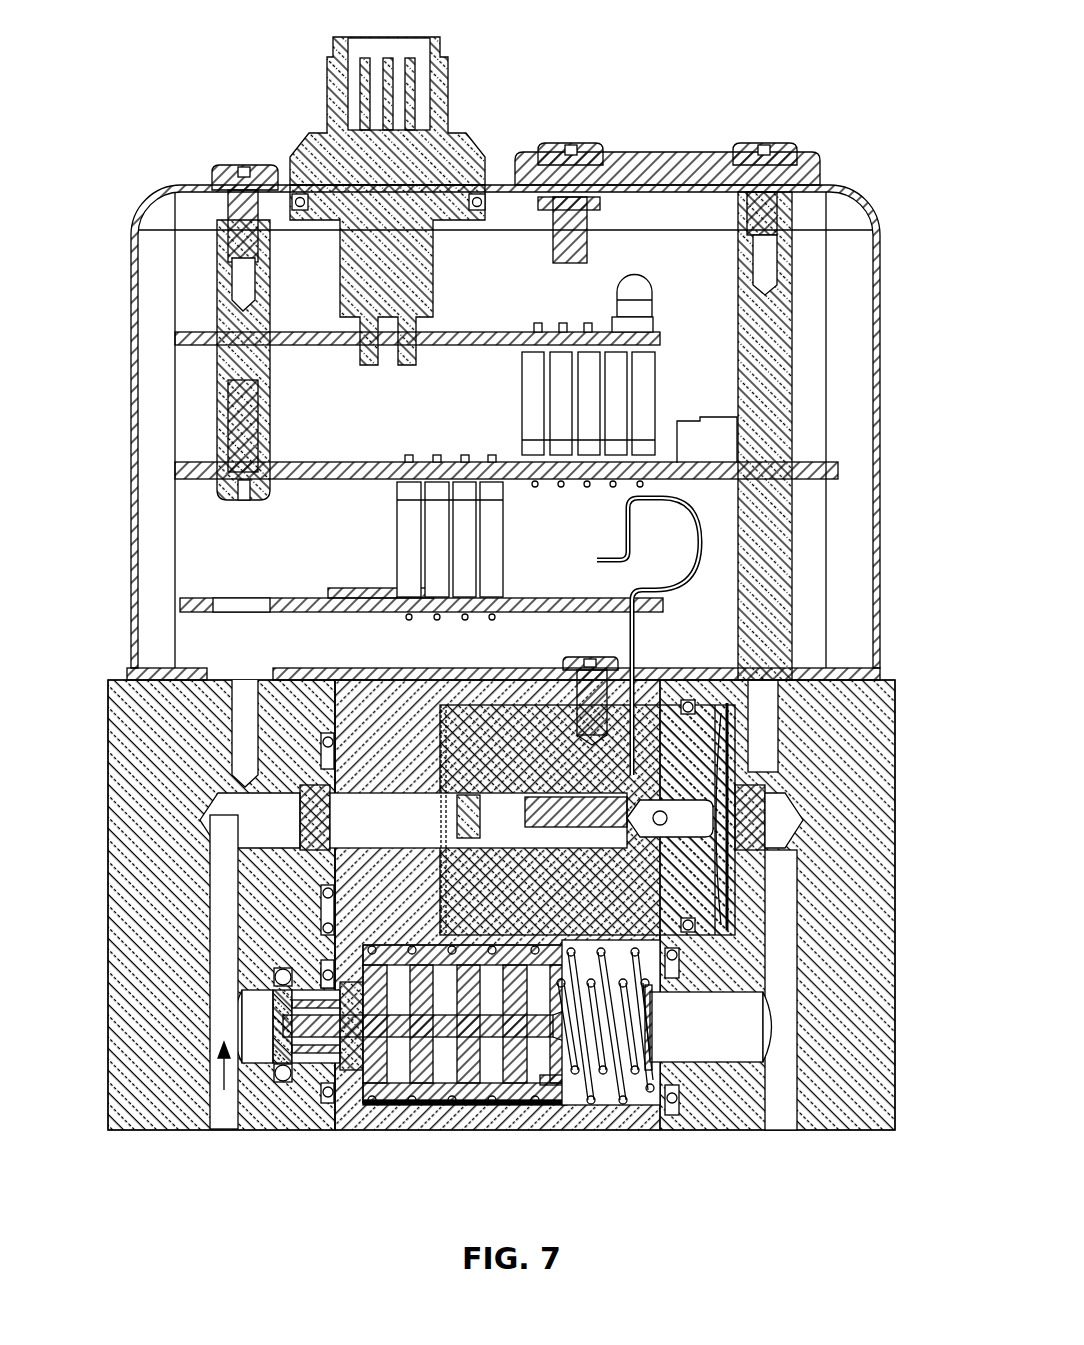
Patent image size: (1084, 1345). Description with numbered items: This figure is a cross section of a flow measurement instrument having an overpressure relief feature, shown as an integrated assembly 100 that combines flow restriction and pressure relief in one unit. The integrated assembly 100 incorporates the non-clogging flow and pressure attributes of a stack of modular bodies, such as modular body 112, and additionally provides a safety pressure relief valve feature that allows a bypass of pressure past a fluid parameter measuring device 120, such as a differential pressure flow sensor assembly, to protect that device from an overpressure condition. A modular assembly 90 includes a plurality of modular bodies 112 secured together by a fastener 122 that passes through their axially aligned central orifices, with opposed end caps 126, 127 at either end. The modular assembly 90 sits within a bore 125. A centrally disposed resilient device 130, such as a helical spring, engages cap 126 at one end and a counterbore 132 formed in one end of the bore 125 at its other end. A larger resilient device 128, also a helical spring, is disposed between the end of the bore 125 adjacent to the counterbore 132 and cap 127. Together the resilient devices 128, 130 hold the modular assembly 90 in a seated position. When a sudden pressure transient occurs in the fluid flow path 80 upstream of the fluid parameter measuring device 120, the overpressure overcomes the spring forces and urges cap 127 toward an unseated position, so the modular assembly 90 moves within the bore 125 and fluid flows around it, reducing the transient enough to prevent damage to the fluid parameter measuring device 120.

The integrated assembly 100 is at (216, 68).
The fluid parameter measuring device 120 is at (750, 773).
The end cap 127 is at (310, 975).
The resilient device 130 is at (642, 1030).
The counterbore 132 is at (652, 1065).
The fluid flow path 80 is at (240, 1104).
The modular assembly 90 is at (153, 1146).
The fastener 122 is at (345, 1032).
The modular body 112 is at (385, 1098).
The end cap 126 is at (540, 1102).
The bore 125 is at (553, 1100).
The resilient device 128 is at (597, 1100).